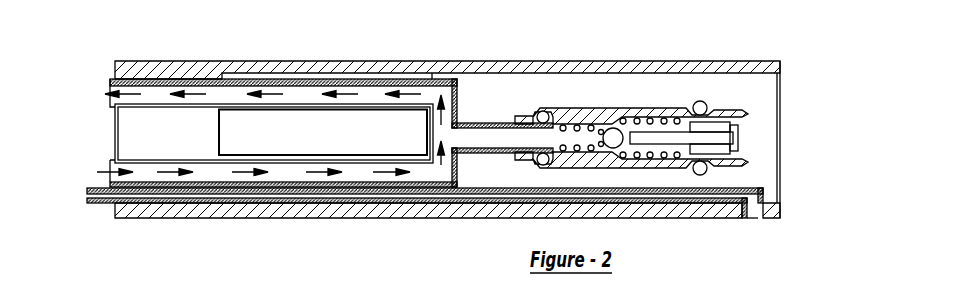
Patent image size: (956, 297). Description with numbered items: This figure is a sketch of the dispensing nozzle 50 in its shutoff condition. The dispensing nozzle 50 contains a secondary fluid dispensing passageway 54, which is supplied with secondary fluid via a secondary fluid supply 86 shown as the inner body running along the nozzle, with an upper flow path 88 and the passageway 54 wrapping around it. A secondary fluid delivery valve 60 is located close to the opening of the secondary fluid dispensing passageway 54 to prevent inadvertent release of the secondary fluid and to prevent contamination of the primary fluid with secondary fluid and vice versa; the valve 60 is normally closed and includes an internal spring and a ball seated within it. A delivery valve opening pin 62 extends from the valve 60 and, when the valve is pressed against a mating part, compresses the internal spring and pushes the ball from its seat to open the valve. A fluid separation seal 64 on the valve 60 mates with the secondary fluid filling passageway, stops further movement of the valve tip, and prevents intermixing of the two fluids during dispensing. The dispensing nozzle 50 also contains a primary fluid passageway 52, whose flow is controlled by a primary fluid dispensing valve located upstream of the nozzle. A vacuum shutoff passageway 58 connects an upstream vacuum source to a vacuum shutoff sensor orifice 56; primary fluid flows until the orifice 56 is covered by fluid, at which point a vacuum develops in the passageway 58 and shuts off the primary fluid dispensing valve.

The dispensing nozzle 50 is at (72, 74).
The primary fluid passageway 52 is at (127, 130).
The secondary fluid dispensing passageway 54 is at (490, 135).
The vacuum shutoff sensor orifice 56 is at (752, 210).
The vacuum shutoff passageway 58 is at (317, 195).
The secondary fluid delivery valve 60 is at (653, 107).
The delivery valve opening pin 62 is at (737, 131).
The fluid separation seal 64 is at (702, 104).
The secondary fluid supply 86 is at (355, 173).
The upper flow passage 88 is at (372, 93).